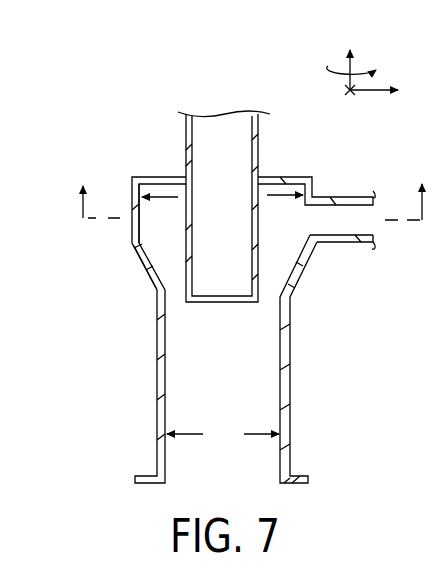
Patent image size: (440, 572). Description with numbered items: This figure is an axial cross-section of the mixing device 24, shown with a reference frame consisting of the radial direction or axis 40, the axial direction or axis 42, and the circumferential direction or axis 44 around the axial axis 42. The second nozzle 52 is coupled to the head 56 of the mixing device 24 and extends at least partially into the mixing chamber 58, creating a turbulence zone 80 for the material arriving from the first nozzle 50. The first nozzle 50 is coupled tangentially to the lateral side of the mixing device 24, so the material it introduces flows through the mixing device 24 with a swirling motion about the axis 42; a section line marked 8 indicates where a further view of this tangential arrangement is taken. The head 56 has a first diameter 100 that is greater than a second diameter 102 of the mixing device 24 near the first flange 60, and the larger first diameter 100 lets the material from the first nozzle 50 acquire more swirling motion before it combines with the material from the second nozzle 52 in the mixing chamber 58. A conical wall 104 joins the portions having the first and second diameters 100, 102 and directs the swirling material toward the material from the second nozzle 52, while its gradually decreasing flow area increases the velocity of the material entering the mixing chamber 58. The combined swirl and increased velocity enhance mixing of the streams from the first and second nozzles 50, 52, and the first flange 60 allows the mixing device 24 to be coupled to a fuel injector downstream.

The mixing device 24 is at (238, 76).
The second nozzle 52 is at (258, 157).
The head 56 is at (160, 177).
The turbulence zone 80 is at (172, 253).
The first nozzle 50 is at (341, 196).
The first diameter 100 is at (277, 201).
The conical wall 104 is at (299, 272).
The mixing chamber 58 is at (223, 312).
The second diameter 102 is at (223, 437).
The first flange 60 is at (294, 478).
The section line 8 is at (251, 198).
The axial direction or axis 42 is at (353, 62).
The radial direction or axis 40 is at (367, 95).
The circumferential direction or axis 44 is at (382, 73).